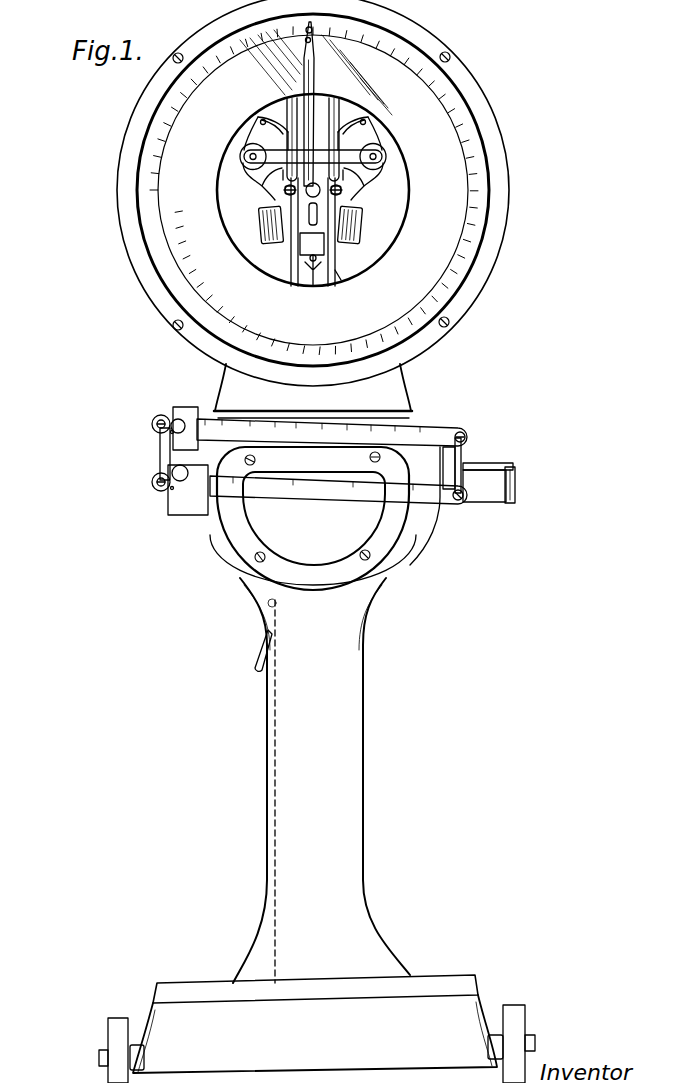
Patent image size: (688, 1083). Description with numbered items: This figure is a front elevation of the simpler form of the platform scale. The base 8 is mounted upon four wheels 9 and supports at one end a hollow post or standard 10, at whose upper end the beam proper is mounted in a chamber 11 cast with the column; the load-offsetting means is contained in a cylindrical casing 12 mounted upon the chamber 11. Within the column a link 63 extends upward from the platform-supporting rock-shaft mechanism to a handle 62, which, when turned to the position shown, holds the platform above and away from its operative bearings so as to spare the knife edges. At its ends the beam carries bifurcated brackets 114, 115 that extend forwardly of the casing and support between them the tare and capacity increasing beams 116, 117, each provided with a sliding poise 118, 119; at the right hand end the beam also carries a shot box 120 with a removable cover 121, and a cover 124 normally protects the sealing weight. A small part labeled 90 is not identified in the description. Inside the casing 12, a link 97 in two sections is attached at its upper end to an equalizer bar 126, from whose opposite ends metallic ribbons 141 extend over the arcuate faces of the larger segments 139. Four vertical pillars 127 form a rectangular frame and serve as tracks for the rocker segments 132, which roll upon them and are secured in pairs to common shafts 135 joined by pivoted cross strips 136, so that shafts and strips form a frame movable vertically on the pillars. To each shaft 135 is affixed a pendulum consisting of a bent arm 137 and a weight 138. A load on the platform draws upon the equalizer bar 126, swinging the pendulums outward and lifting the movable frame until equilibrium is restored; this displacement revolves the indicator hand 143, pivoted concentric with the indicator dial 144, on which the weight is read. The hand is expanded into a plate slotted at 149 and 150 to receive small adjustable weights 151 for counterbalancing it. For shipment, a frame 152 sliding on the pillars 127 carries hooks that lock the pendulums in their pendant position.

The base 8 is at (485, 1010).
The wheels 9 is at (527, 1016).
The hollow post or standard 10 is at (366, 706).
The chamber 11 is at (210, 535).
The casing 12 is at (509, 252).
The handle 62 is at (263, 640).
The link 63 is at (252, 791).
The frame member 90 is at (446, 478).
The link 97 is at (311, 286).
The bifurcated bracket 114 is at (463, 456).
The bifurcated bracket 115 is at (154, 455).
The tare and capacity increasing beam 116 is at (310, 440).
The tare and capacity increasing beam 117 is at (330, 494).
The sliding poise 118 is at (187, 407).
The sliding poise 119 is at (170, 507).
The shot box 120 is at (516, 488).
The removable cover 121 is at (514, 469).
The cover 124 is at (490, 477).
The equalizer bar 126 is at (322, 270).
The vertical pillars 127 is at (287, 100).
The rocker segments 132 is at (262, 122).
The shaft 135 is at (240, 157).
The pivoted cross strips 136 is at (313, 157).
The bent arm 137 is at (262, 180).
The weight 138 is at (275, 243).
The larger segment 139 is at (380, 104).
The metallic ribbon 141 is at (300, 250).
The indicator hand 143 is at (316, 84).
The indicator dial 144 is at (312, 187).
The slot 149 is at (284, 192).
The slot 150 is at (317, 218).
The small adjustable weights 151 is at (342, 191).
The frame 152 is at (340, 281).